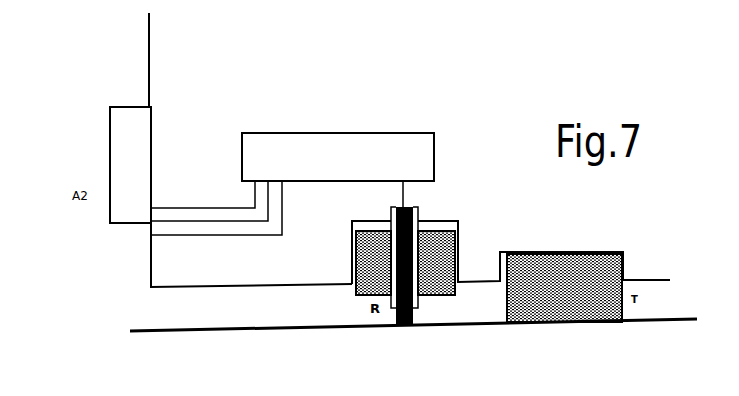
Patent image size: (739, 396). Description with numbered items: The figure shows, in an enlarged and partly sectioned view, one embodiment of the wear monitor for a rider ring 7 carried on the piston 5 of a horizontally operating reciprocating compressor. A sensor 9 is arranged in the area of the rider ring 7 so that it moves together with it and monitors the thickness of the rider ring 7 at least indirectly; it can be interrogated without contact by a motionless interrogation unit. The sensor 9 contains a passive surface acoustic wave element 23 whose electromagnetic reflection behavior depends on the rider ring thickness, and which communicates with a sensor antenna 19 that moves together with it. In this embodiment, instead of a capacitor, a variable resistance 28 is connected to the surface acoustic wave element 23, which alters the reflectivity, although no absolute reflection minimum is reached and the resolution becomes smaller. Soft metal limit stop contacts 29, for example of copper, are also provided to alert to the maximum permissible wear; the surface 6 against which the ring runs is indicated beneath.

The sensor antenna 19 is at (117, 142).
The sensor 9 is at (449, 138).
The surface acoustic wave element 23 is at (313, 169).
The variable resistance 28 is at (418, 217).
The soft metal limit stop contacts 29 is at (418, 310).
The rider ring 7 is at (600, 313).
The piston 5 is at (643, 277).
The rim / ground 6 is at (655, 324).